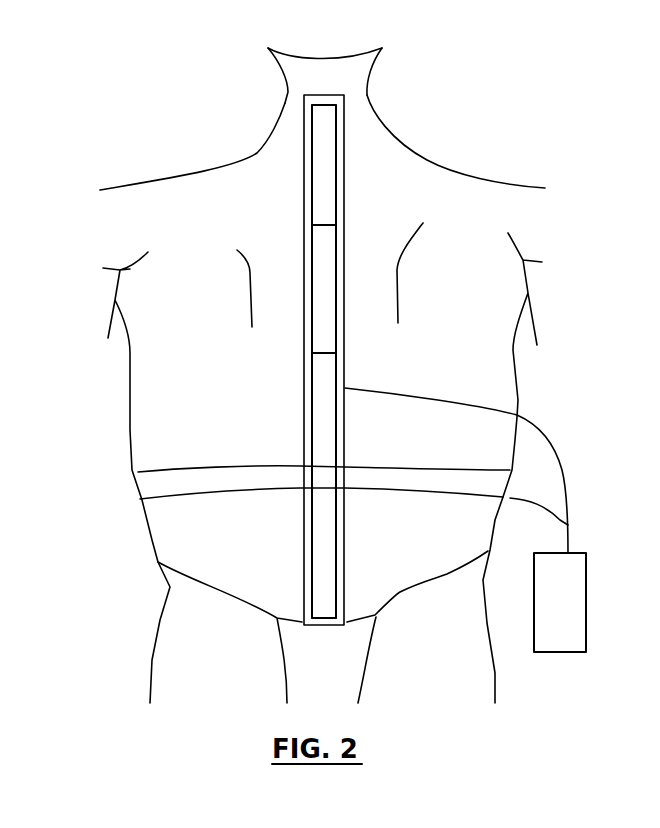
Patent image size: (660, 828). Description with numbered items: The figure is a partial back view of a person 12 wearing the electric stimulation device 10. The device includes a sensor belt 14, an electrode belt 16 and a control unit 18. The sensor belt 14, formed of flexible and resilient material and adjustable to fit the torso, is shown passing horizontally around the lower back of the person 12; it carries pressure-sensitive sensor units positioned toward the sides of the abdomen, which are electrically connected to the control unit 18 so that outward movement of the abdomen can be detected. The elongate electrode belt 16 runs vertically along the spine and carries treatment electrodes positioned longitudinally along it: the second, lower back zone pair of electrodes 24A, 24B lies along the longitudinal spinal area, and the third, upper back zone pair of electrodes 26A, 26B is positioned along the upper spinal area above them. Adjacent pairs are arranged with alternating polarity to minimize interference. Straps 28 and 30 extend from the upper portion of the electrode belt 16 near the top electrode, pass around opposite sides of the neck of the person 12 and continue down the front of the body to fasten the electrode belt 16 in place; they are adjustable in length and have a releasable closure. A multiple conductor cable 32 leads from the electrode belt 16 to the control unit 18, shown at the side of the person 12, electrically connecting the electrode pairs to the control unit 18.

The electric stimulation device 10 is at (577, 672).
The person 12 is at (455, 170).
The sensor belt 14 is at (168, 470).
The electrode belt 16 is at (280, 200).
The control unit 18 is at (586, 602).
The lower back zone electrode 24A is at (345, 549).
The lower back zone electrode 24B is at (345, 423).
The upper back zone electrode 26A is at (340, 243).
The upper back zone electrode 26B is at (337, 163).
The strap 28 is at (305, 99).
The strap 30 is at (345, 100).
The multiple conductor cable 32 is at (560, 470).